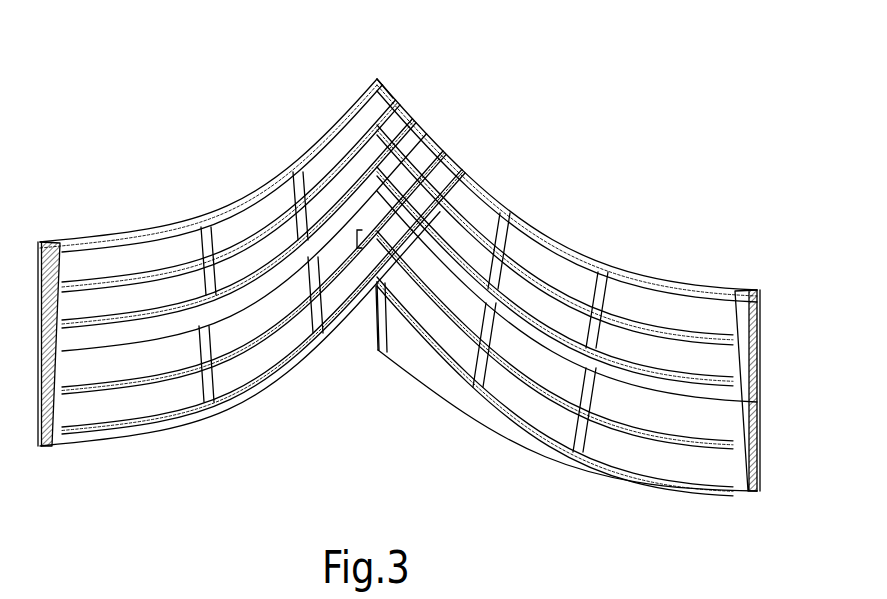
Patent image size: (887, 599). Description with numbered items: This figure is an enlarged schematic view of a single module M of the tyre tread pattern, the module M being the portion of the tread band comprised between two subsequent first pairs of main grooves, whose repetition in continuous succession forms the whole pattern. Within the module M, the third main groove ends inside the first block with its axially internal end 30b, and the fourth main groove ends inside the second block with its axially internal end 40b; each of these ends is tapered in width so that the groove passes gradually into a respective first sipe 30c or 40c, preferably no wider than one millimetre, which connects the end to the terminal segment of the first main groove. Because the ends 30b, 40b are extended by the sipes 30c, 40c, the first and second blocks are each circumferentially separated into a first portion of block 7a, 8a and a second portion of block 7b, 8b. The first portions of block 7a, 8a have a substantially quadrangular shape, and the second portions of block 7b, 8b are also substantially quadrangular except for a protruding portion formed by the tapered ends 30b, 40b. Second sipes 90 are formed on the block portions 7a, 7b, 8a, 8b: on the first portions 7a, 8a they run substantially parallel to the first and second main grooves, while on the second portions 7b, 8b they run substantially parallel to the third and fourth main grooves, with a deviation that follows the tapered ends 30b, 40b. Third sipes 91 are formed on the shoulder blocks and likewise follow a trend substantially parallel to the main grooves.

The axially internal end of the third main groove 30b is at (330, 222).
The sipe 30c is at (358, 180).
The axially internal end of the fourth main groove 40b is at (463, 275).
The sipe 40c is at (440, 233).
The first portion of block 7a is at (351, 272).
The second portion of block 7b is at (392, 248).
The first portion of block 8a is at (481, 209).
The second portion of block 8b is at (437, 303).
The second sipes 90 is at (452, 312).
The third sipes 91 is at (277, 327).
The single module M is at (776, 275).